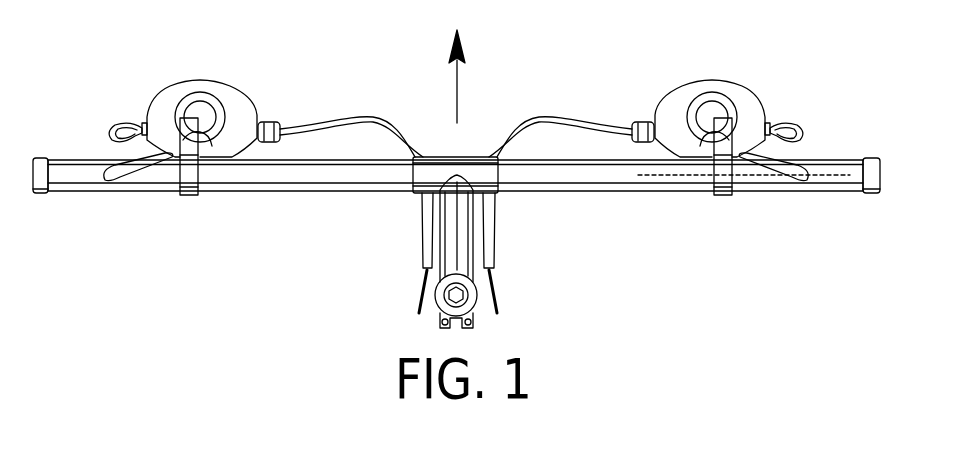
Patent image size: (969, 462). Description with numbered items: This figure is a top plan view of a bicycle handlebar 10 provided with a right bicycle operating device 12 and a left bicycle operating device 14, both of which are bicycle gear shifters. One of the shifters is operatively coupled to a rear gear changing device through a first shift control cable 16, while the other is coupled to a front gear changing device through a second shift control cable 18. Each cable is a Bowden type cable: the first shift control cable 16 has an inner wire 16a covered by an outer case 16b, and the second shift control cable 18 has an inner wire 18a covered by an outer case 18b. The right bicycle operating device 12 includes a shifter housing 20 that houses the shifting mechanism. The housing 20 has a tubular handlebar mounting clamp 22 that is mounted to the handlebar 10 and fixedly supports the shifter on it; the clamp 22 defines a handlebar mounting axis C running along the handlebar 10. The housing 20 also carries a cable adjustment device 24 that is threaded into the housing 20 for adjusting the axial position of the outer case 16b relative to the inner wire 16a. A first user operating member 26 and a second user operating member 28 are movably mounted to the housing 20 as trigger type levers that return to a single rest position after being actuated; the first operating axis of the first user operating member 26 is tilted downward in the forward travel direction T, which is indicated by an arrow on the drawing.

The bicycle handlebar 10 is at (252, 193).
The right bicycle operating device 12 is at (680, 148).
The left bicycle operating device 14 is at (182, 67).
The first shift control cable 16 is at (574, 262).
The inner wire 16a is at (554, 300).
The outer case 16b is at (498, 243).
The second shift control cable 18 is at (348, 262).
The inner wire 18a is at (420, 290).
The outer case 18b is at (422, 243).
The shifter housing 20 is at (680, 93).
The handlebar mounting clamp 22 is at (725, 195).
The cable adjustment device 24 is at (643, 122).
The first user operating member 26 is at (793, 122).
The second user operating member 28 is at (790, 185).
The handlebar mounting axis C is at (697, 177).
The travel direction T is at (462, 78).